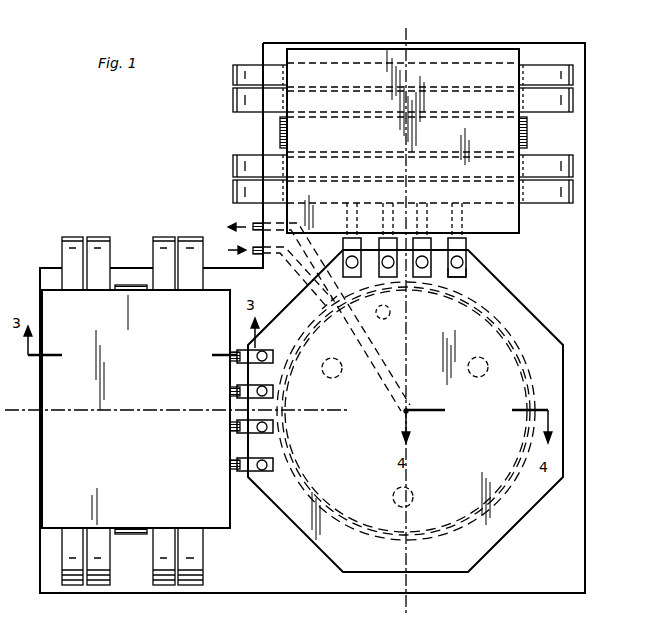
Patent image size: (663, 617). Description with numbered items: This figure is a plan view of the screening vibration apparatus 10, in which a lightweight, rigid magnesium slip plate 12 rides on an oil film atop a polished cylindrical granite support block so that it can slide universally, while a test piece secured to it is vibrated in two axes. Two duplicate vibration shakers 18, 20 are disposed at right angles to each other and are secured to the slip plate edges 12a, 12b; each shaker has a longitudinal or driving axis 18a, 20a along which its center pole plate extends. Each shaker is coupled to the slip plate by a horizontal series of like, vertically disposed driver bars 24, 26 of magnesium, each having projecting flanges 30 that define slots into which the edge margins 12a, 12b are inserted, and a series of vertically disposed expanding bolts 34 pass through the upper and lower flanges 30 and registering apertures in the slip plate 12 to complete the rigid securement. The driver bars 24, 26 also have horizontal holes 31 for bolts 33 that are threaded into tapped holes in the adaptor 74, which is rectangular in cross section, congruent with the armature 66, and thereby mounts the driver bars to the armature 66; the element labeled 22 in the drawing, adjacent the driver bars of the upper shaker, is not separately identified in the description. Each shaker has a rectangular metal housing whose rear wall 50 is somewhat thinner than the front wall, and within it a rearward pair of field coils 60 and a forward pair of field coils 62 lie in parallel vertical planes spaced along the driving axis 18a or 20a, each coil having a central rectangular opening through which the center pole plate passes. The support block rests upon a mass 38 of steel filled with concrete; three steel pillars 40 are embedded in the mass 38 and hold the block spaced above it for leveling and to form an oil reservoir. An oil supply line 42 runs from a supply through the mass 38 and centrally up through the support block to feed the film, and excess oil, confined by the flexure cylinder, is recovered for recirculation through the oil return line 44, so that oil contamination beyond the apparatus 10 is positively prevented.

The screening vibration apparatus 10 is at (153, 172).
The slip plate 12 is at (505, 531).
The slip plate edge 12a is at (468, 259).
The slip plate edge 12b is at (266, 478).
The vibration shaker 18 is at (222, 43).
The longitudinal driving axis 18a is at (408, 36).
The vibration shaker 20 is at (108, 229).
The longitudinal driving axis 20a is at (350, 424).
The connecting stubs 22 is at (467, 244).
The driver bar 24 is at (467, 281).
The driver bar 26 is at (234, 398).
The projecting flanges 30 is at (274, 357).
The horizontal holes 31 is at (240, 366).
The bolts 33 is at (243, 474).
The expanding bolts 34 is at (268, 350).
The mass 38 is at (545, 590).
The steel pillars 40 is at (338, 377).
The oil supply line 42 is at (393, 371).
The oil return line 44 is at (383, 319).
The rear wall 50 is at (294, 50).
The rearward field coils 60 is at (109, 598).
The forward field coils 62 is at (202, 598).
The armature 66 is at (280, 132).
The adaptor 74 is at (521, 218).